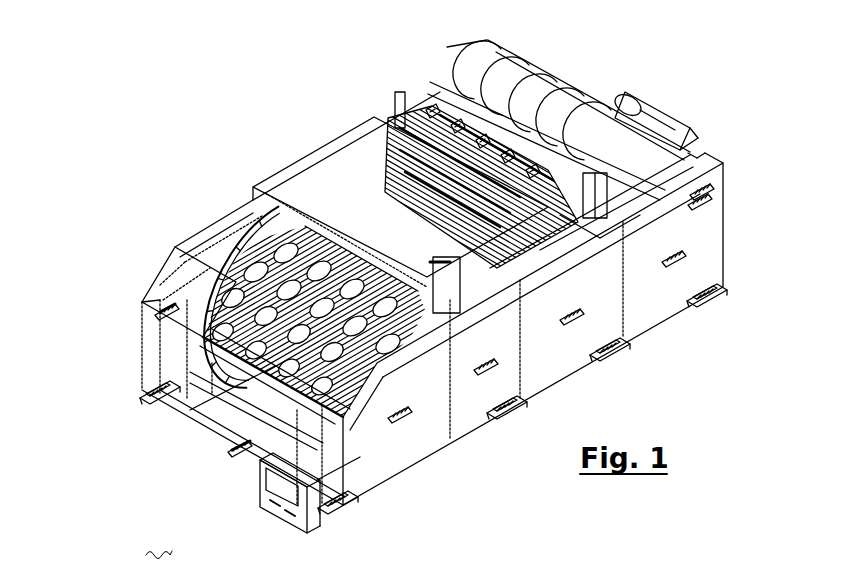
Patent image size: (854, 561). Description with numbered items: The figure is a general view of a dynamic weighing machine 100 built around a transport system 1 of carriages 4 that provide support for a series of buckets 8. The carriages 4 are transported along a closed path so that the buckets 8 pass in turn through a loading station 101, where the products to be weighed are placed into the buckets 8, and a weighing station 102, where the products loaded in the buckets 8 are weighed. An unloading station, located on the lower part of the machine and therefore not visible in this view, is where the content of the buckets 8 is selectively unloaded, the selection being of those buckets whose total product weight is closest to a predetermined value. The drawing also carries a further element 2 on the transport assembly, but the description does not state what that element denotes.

The apparatus 100 is at (235, 175).
The processing modules 101 is at (398, 160).
The cover plate 102 is at (350, 208).
The hood 1 is at (207, 277).
The drum 2 is at (217, 337).
The guard ring 4 is at (207, 315).
The rails 8 is at (335, 410).